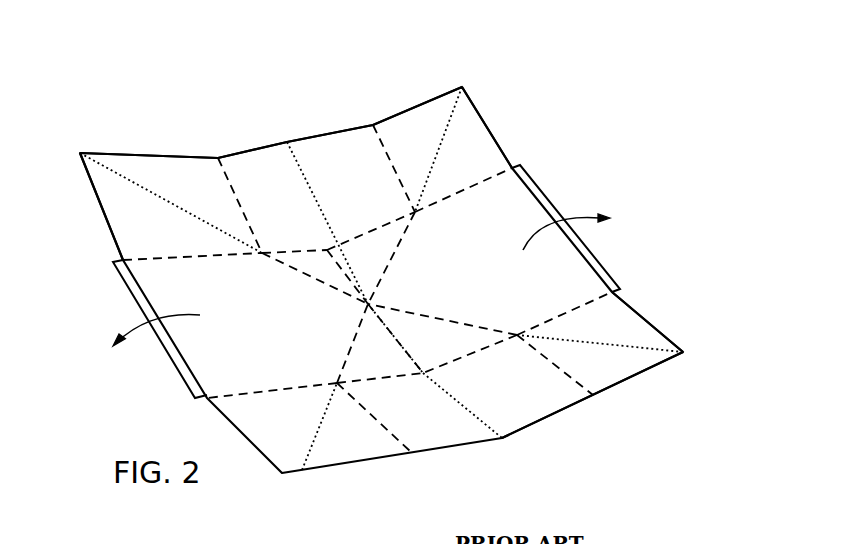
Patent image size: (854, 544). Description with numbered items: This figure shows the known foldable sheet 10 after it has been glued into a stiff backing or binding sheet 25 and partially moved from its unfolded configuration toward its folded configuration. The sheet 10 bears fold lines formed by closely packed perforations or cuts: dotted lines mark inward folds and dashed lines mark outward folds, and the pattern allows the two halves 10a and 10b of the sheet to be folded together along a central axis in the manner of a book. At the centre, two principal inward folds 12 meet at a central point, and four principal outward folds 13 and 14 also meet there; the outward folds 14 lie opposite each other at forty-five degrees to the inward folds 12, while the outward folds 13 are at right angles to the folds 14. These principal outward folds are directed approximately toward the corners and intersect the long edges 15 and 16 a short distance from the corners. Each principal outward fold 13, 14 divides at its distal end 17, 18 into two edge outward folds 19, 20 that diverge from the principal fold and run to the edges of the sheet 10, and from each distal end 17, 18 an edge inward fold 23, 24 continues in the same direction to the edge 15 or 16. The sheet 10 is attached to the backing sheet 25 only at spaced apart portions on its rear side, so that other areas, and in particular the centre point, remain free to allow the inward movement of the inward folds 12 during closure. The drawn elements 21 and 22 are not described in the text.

The foldable sheet 10 is at (436, 80).
The first half of the sheet 10a is at (228, 296).
The second half of the sheet 10b is at (509, 271).
The principal inward folds 12 is at (318, 182).
The principal outward folds 13 is at (408, 263).
The principal outward folds 14 is at (303, 283).
The long edge of the sheet 15 is at (327, 132).
The long edge of the sheet 16 is at (557, 417).
The distal end of principal outward fold 17 is at (427, 220).
The distal end of principal outward fold 18 is at (270, 250).
The edge outward fold 19 is at (175, 252).
The edge outward fold 20 is at (386, 148).
The right side edge 21 is at (492, 135).
The left side edge 22 is at (108, 218).
The edge inward fold 23 is at (436, 143).
The edge inward fold 24 is at (172, 198).
The backing sheet 25 is at (548, 200).